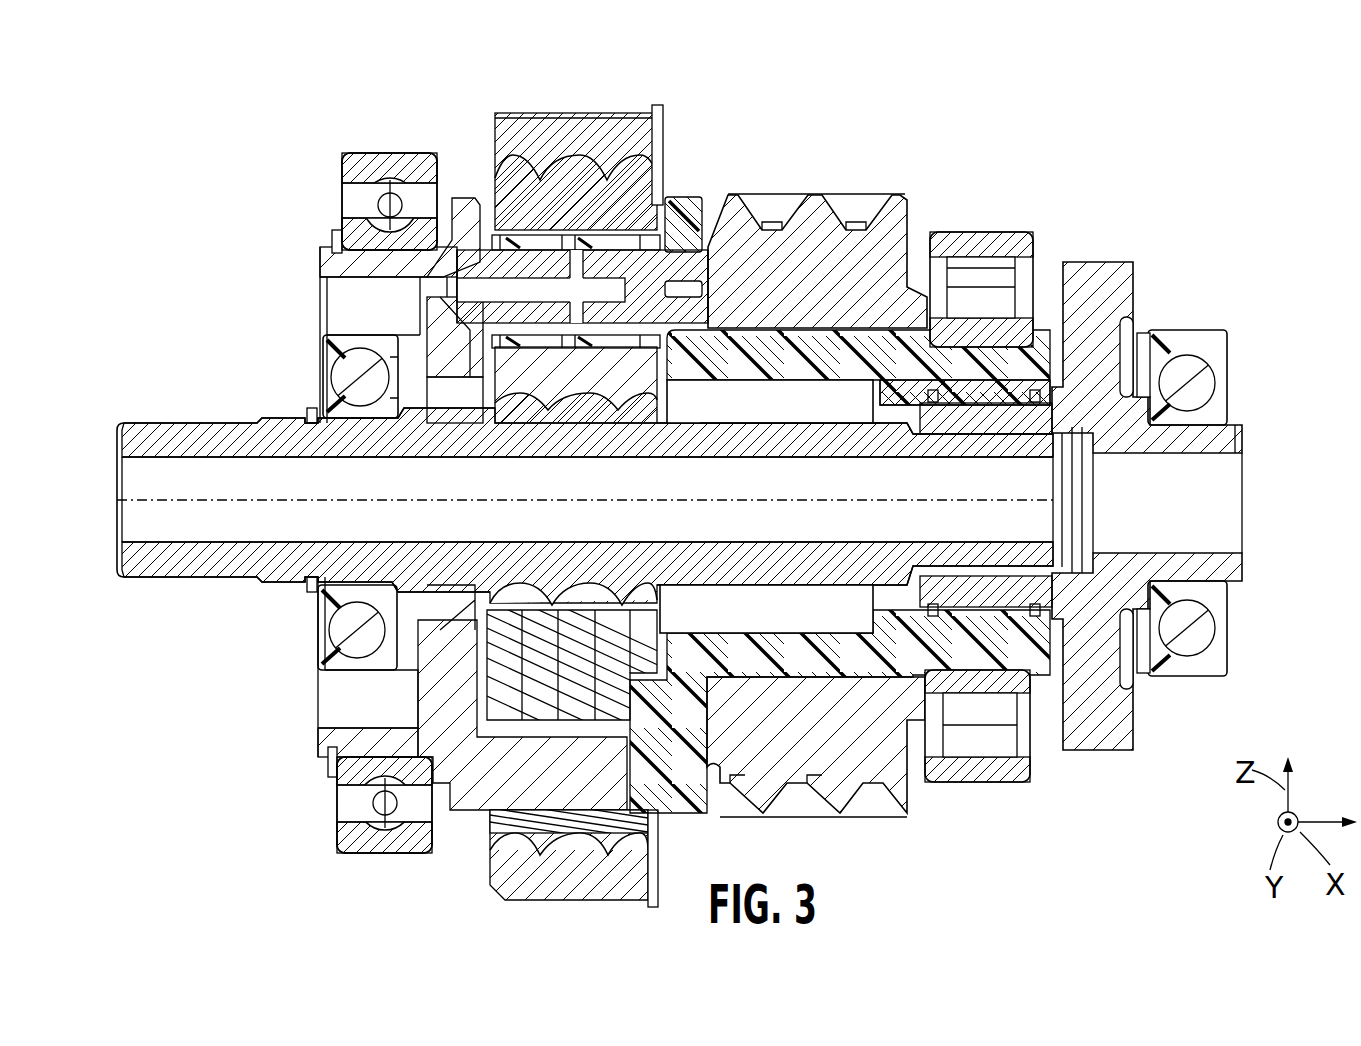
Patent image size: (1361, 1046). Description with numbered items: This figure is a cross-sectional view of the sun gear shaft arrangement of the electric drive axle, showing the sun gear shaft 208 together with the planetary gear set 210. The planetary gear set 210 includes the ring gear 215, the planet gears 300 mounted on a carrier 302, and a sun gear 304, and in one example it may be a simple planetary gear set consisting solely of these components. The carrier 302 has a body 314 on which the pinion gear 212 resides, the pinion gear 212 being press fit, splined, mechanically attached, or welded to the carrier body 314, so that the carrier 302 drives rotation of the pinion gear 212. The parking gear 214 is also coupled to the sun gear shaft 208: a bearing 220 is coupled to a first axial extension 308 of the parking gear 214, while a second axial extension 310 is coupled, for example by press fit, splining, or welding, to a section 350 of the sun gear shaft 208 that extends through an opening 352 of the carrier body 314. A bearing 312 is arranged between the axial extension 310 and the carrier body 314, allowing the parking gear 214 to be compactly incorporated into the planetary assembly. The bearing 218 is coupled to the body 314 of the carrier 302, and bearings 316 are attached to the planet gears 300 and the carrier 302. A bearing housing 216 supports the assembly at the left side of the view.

The sun gear shaft 208 is at (160, 438).
The planetary gear set 210 is at (606, 82).
The pinion gear 212 is at (855, 255).
The parking gear 214 is at (1100, 270).
The ring gear 215 is at (527, 135).
The bearing housing 216 is at (355, 160).
The bearing 218 is at (978, 240).
The bearing 220 is at (328, 345).
The planet gears 300 is at (515, 192).
The carrier 302 is at (700, 250).
The sun gear 304 is at (632, 387).
The first axial extension 308 is at (1220, 443).
The second axial extension 310 is at (1022, 593).
The bearing 312 is at (958, 615).
The carrier body 314 is at (838, 370).
The bearings 316 is at (645, 235).
The section of the sun gear shaft 350 is at (760, 433).
The opening 352 is at (792, 410).